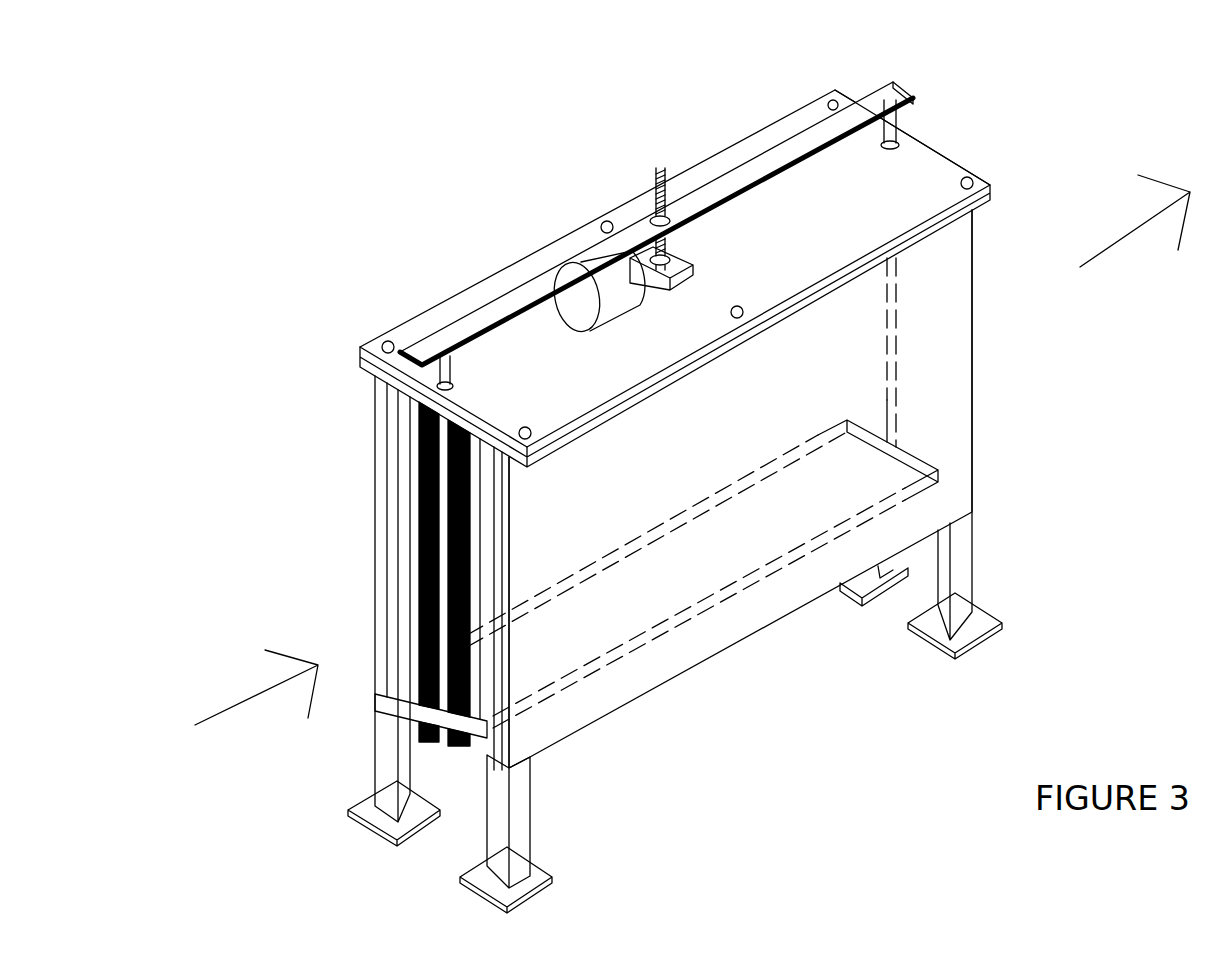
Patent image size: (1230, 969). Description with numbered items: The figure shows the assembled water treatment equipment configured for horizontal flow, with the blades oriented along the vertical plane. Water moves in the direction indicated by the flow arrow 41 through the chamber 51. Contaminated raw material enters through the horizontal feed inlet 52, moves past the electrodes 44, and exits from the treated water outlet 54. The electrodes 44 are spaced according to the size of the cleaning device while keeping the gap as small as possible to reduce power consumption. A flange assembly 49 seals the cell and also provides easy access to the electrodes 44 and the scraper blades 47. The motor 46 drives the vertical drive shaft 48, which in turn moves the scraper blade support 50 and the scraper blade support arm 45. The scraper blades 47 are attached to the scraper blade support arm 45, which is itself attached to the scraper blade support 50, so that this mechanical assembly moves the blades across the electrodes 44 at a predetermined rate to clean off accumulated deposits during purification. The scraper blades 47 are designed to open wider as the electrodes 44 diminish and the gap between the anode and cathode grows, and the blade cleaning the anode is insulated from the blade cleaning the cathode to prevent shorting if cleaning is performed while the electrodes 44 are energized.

The flow arrow 41 is at (257, 693).
The electrodes 44 is at (412, 540).
The scraper blade support arm 45 is at (405, 677).
The motor 46 is at (577, 302).
The scraper blades 47 is at (675, 533).
The vertical drive shaft 48 is at (658, 165).
The flange assembly 49 is at (457, 290).
The scraper blade support 50 is at (795, 147).
The chamber 51 is at (940, 365).
The horizontal feed inlet 52 is at (397, 513).
The treated water outlet 54 is at (1137, 227).